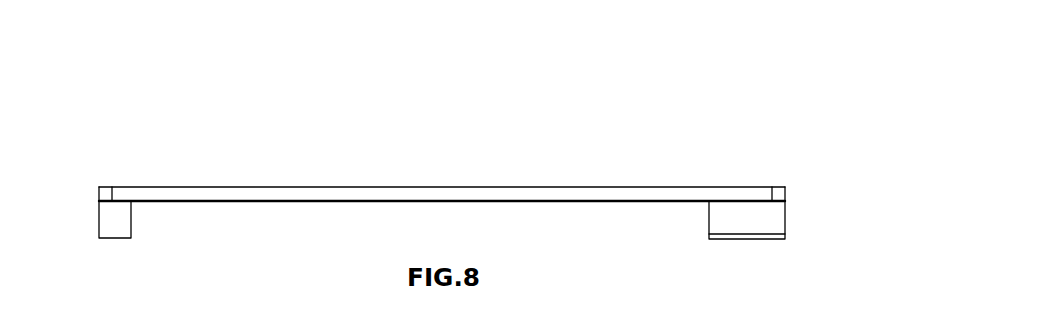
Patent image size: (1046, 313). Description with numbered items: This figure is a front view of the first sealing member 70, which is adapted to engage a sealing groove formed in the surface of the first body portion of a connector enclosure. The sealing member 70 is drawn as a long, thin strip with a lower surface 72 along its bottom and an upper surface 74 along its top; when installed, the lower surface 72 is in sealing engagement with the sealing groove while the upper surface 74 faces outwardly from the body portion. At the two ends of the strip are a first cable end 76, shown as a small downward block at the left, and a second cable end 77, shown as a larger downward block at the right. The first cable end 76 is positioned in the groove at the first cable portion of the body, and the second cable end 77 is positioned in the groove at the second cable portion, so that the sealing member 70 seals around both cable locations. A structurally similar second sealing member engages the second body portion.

The first sealing member 70 is at (446, 179).
The lower surface 72 is at (275, 200).
The upper surface 74 is at (365, 188).
The first cable end 76 is at (100, 212).
The second cable end 77 is at (785, 220).